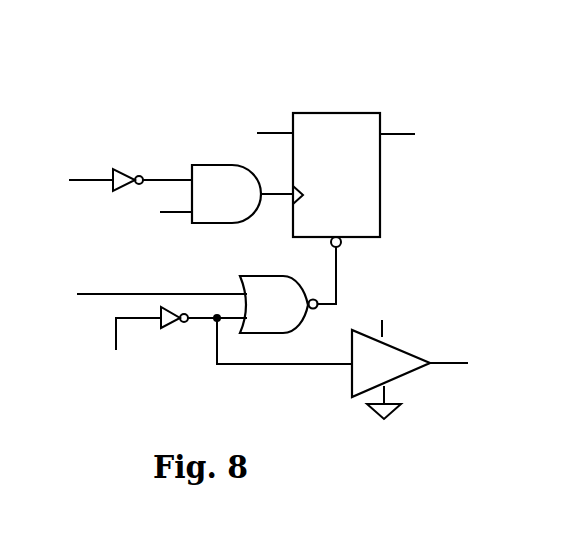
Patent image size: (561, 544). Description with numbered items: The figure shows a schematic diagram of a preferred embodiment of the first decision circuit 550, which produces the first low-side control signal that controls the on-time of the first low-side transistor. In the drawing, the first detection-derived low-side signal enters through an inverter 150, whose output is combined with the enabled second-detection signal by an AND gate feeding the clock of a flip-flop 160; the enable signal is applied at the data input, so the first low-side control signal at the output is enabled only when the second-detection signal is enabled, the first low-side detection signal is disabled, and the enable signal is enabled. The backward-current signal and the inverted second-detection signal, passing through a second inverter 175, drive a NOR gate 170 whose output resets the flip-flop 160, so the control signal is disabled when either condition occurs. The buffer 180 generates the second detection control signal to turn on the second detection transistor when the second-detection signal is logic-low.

The output circuit 550 is at (126, 53).
The inverter 150 is at (128, 172).
The D flip-flop 160 is at (357, 189).
The NOR gate 170 is at (266, 276).
The inverter 175 is at (173, 329).
The buffer 180 is at (401, 351).